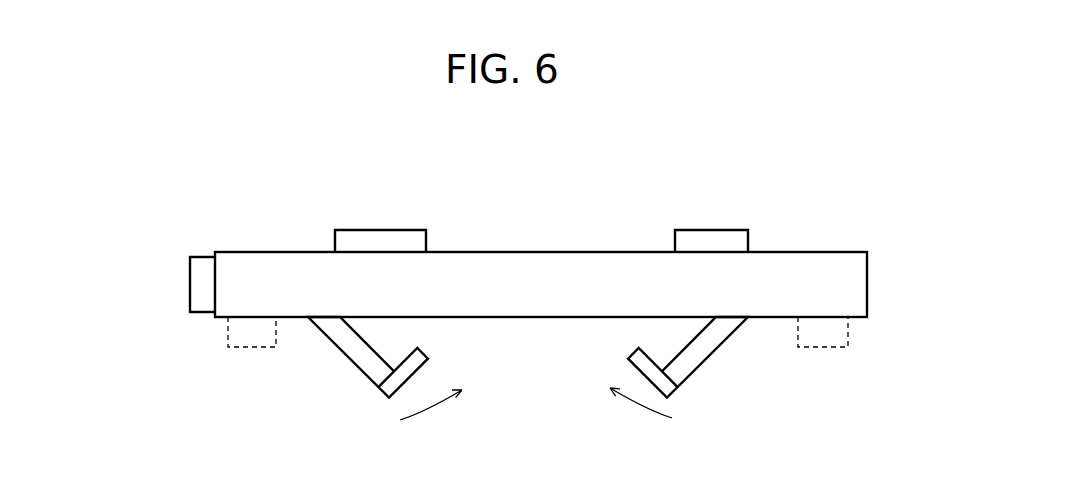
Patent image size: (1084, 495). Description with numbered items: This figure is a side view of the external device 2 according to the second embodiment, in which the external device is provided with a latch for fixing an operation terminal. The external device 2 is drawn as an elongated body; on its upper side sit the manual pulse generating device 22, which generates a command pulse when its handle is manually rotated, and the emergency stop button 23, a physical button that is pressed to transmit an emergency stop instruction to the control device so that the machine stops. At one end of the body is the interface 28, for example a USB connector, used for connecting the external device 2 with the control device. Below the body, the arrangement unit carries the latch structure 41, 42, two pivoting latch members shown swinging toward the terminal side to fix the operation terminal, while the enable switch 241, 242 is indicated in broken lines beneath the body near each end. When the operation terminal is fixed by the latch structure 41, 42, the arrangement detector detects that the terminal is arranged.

The external device 2 is at (867, 262).
The manual pulse generating device 22 is at (376, 230).
The emergency stop button 23 is at (712, 230).
The interface 28 is at (190, 284).
The latch structure 41 is at (338, 350).
The latch structure 42 is at (707, 363).
The enable switch 241 is at (830, 350).
The enable switch 242 is at (240, 350).